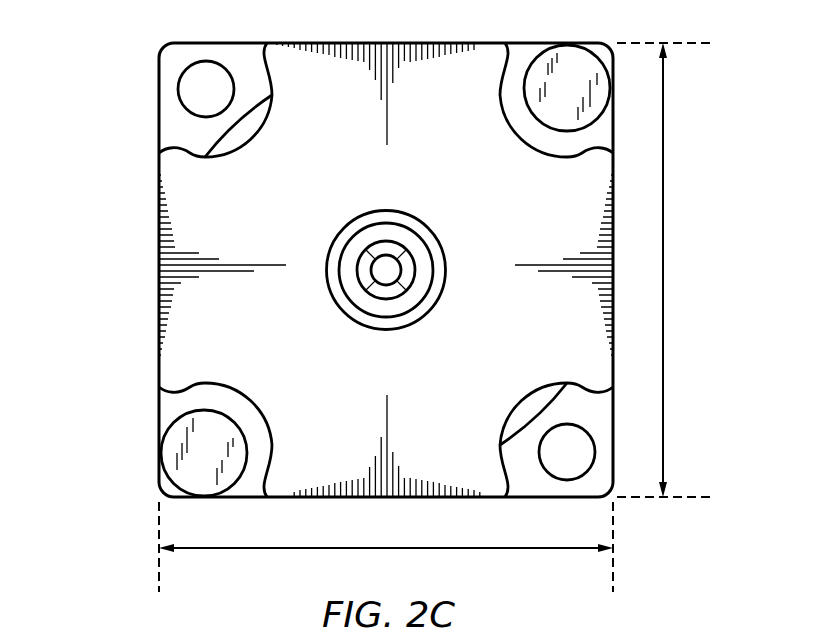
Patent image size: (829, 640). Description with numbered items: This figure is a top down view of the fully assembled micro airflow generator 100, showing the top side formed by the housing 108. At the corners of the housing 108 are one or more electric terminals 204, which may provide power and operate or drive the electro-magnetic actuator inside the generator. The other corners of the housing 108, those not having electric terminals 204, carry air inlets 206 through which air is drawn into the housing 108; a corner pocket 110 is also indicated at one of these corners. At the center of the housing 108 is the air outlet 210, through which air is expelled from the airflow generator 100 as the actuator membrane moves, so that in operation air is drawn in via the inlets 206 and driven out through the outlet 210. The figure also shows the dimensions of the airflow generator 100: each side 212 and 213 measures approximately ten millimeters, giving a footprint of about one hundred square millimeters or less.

The micro airflow generator 100 is at (113, 18).
The housing 108 is at (187, 230).
The corner pocket 110 is at (517, 434).
The electric terminal 204 is at (573, 54).
The air inlet 206 is at (255, 122).
The air outlet 210 is at (392, 270).
The side 212 is at (665, 270).
The side 213 is at (383, 549).